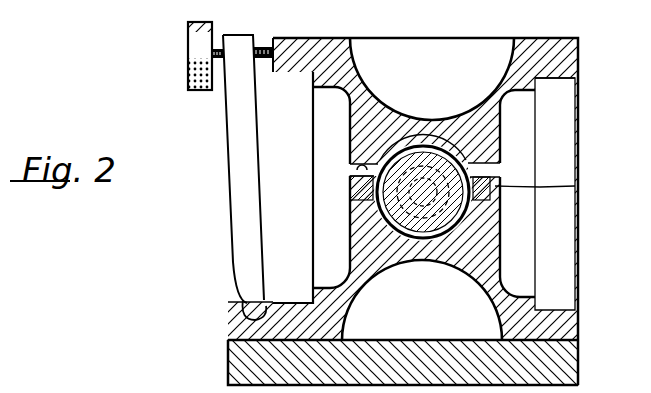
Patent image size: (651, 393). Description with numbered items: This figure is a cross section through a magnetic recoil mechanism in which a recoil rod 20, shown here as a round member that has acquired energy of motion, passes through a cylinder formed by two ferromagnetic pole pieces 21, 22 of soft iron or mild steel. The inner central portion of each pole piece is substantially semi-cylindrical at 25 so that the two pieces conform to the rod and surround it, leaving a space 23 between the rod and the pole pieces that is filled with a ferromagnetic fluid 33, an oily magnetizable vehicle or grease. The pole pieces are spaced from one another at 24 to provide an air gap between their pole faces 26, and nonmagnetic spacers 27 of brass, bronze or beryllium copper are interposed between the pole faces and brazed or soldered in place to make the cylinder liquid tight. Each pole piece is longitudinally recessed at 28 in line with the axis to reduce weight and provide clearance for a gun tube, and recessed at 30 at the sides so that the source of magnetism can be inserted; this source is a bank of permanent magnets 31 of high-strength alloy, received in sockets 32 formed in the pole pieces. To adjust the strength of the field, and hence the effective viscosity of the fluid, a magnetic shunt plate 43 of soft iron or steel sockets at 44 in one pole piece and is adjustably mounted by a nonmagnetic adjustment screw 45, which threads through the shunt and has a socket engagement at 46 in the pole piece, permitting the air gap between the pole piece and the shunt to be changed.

The recoil rod 20 is at (462, 224).
The pole piece 21 is at (393, 118).
The pole piece 22 is at (408, 262).
The space between rod and pole pieces 23 is at (440, 150).
The air gap 24 is at (360, 189).
The semi-cylindrical inner portion 25 is at (405, 150).
The pole faces 26 is at (362, 168).
The spacers 27 is at (575, 186).
The longitudinal recess 28 is at (403, 53).
The side recess 30 is at (527, 127).
The permanent magnets 31 is at (570, 107).
The sockets 32 is at (563, 334).
The ferromagnetic fluid 33 is at (478, 164).
The plate 43 is at (235, 220).
The socket 44 is at (244, 312).
The adjustment screw 45 is at (262, 50).
The socket engagement 46 is at (283, 46).